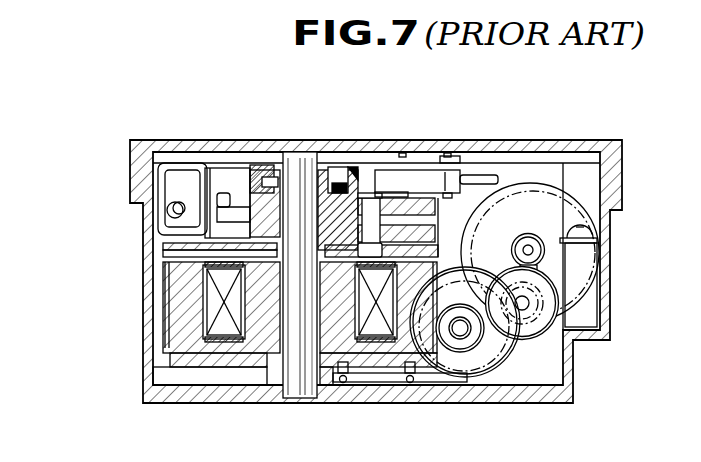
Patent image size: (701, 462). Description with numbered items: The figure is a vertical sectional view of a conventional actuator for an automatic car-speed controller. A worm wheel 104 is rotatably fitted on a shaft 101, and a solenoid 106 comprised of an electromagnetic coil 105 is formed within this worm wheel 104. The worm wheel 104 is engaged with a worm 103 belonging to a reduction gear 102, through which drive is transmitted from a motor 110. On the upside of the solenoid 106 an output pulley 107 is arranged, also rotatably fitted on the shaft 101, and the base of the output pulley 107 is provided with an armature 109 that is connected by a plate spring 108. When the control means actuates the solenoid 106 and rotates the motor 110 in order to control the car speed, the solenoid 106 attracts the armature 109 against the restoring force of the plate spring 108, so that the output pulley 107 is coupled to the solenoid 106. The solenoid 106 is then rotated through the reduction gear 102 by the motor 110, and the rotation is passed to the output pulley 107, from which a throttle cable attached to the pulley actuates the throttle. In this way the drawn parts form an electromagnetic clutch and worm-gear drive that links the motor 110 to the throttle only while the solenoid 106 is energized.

The shaft 101 is at (297, 388).
The reduction gear 102 is at (446, 374).
The worm 103 is at (483, 347).
The worm wheel 104 is at (166, 292).
The electromagnetic coil 105 is at (203, 298).
The solenoid 106 is at (170, 341).
The output pulley 107 is at (433, 232).
The plate spring 108 is at (162, 240).
The armature 109 is at (165, 248).
The motor 110 is at (574, 212).